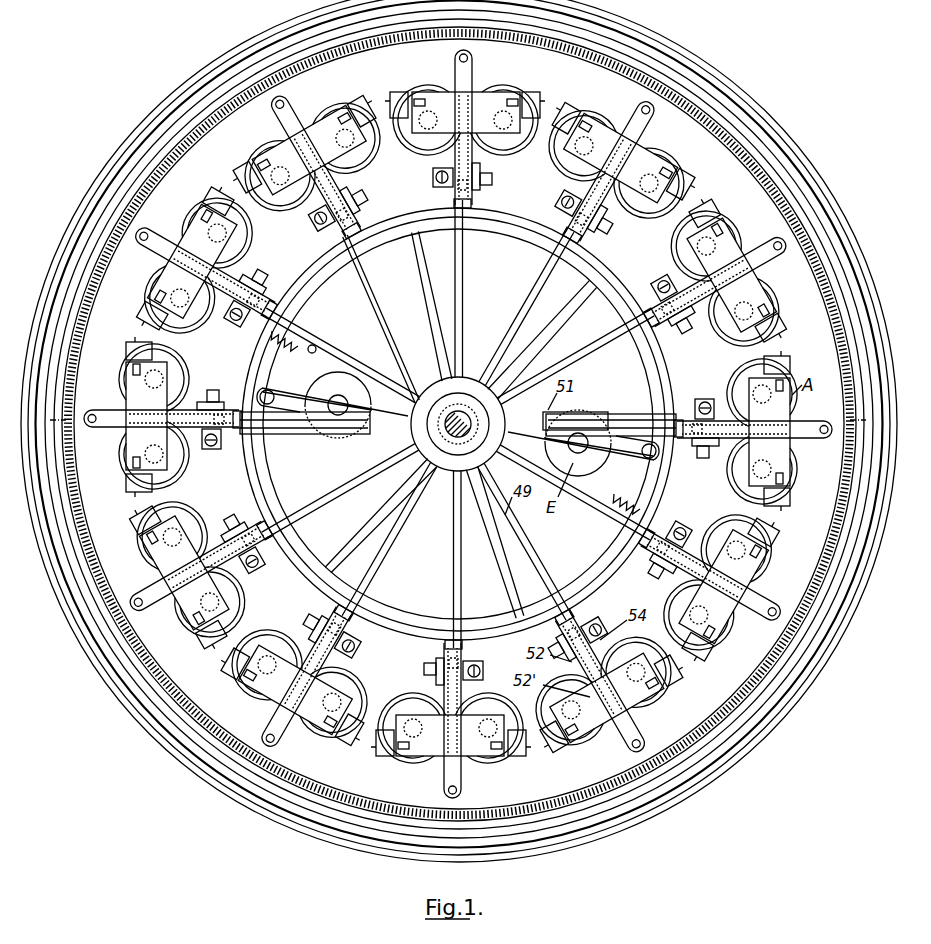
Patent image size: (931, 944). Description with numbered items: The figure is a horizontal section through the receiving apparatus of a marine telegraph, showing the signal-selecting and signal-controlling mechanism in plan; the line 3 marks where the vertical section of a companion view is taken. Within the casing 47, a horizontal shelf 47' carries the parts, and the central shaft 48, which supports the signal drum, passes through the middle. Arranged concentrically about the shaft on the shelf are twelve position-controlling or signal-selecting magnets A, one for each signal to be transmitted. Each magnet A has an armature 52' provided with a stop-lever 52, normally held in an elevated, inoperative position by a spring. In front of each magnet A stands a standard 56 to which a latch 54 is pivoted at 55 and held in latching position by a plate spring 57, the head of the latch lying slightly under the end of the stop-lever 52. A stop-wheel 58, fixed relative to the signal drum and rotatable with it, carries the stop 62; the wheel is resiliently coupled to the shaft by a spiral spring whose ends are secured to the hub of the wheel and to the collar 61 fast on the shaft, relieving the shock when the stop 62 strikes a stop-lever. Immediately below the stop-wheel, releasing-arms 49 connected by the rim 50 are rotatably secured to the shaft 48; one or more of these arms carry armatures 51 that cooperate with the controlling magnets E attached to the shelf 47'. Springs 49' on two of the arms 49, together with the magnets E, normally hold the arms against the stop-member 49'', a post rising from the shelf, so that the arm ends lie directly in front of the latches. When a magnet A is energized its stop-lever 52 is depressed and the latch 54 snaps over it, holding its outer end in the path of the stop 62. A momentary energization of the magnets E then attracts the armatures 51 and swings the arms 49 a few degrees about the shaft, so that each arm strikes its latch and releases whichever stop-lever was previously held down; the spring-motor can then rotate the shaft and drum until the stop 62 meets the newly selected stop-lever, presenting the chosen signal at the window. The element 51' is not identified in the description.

The section line 3 is at (455, 419).
The casing 47 is at (314, 158).
The horizontal shelf 47' is at (605, 153).
The central shaft 48 is at (463, 400).
The releasing-arm 49 is at (379, 318).
The spring 49' is at (303, 324).
The stop-member 49'' is at (339, 333).
The rim 50 is at (303, 588).
The armature 51 is at (324, 419).
The spring 51' is at (619, 498).
The stop-lever 52 is at (278, 183).
The armature 52' is at (312, 151).
The latch 54 is at (205, 397).
The pivot 55 is at (205, 450).
The standard 56 is at (217, 460).
The plate spring 57 is at (213, 397).
The stop-wheel 58 is at (542, 235).
The collar 61 is at (445, 457).
The stop 62 is at (570, 600).
The position-controlling magnet A is at (324, 159).
The controlling magnet E is at (343, 380).